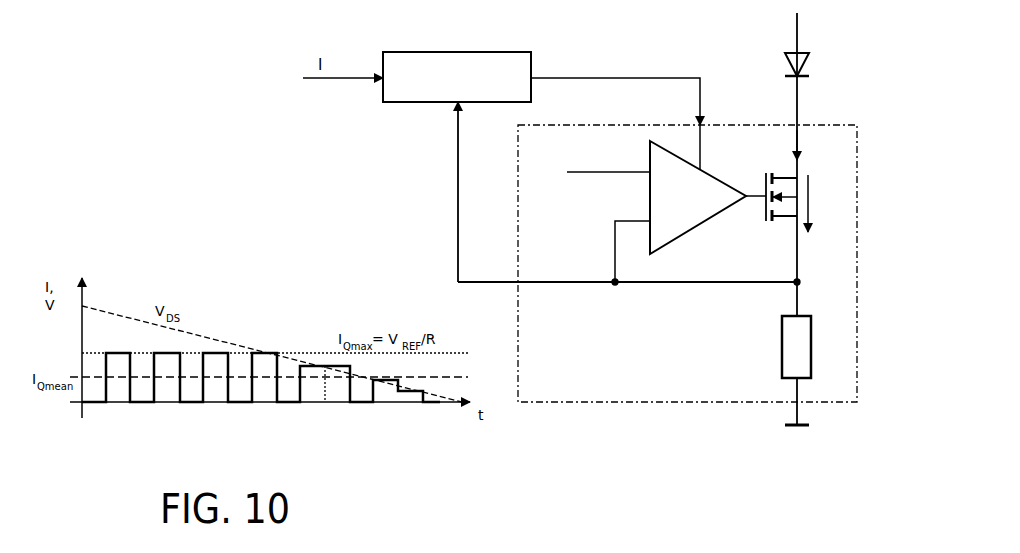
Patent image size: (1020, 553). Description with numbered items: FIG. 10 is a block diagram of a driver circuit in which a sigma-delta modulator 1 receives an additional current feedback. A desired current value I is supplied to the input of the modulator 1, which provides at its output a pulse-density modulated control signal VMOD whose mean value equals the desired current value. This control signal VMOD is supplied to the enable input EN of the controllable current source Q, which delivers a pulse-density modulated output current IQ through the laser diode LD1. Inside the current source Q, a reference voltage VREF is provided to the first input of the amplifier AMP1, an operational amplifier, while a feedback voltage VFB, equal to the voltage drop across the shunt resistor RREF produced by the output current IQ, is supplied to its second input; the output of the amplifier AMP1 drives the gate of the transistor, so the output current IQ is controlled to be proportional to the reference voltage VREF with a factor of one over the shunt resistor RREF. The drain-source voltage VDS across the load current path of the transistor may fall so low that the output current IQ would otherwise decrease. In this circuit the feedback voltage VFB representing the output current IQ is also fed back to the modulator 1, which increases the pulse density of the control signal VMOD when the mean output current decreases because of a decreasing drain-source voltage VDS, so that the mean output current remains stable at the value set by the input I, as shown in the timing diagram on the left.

The sigma-delta modulator 1 is at (465, 51).
The laser diode LD1 is at (812, 71).
The amplifier AMP1 is at (698, 201).
The controllable current source Q is at (857, 191).
The shunt resistor RREF is at (774, 353).
The pulse-density modulated control signal VMOD is at (615, 90).
The reference voltage VREF is at (608, 163).
The feedback voltage VFB is at (571, 283).
The output current IQ is at (806, 145).
The drain-source voltage VDS is at (825, 203).